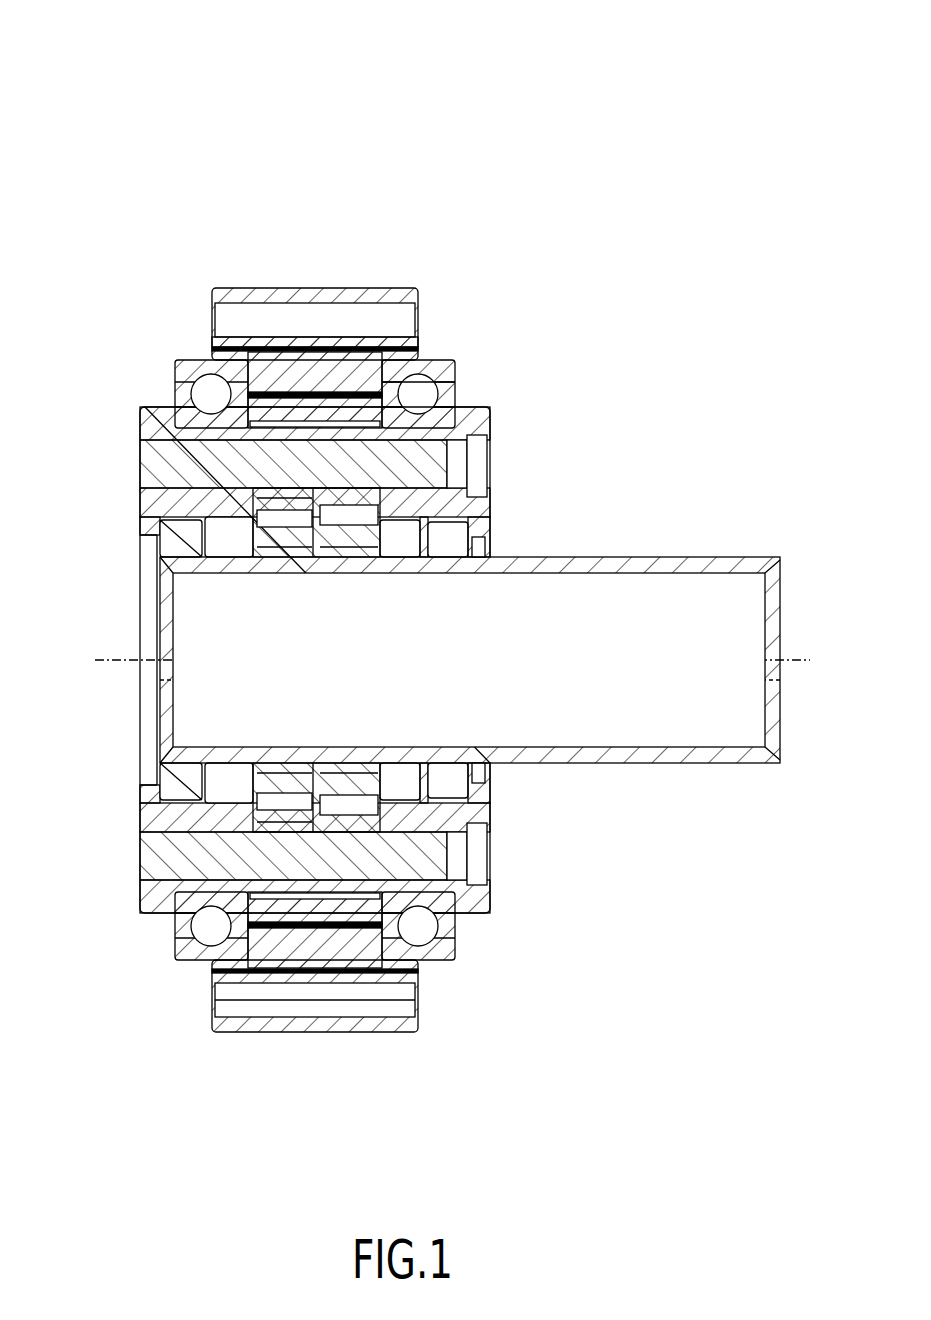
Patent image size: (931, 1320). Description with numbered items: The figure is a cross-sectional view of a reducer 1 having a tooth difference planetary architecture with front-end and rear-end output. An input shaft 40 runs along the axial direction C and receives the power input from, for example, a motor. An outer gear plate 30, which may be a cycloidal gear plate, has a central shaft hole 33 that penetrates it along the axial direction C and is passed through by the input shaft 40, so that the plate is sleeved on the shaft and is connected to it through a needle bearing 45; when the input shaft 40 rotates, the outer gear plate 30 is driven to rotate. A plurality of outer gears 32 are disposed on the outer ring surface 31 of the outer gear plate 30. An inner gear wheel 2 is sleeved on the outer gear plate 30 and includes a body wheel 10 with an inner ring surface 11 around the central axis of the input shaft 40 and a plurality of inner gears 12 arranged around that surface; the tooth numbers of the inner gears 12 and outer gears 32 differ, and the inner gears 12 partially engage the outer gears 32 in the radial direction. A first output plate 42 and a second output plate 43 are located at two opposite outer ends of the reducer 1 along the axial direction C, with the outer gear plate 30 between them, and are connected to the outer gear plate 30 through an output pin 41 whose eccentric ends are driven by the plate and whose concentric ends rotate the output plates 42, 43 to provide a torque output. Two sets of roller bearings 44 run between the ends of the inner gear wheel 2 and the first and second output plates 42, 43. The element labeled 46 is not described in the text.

The reducer 1 is at (792, 51).
The inner gear wheel 2 is at (465, 1013).
The body wheel 10 is at (323, 288).
The inner ring surface 11 is at (312, 348).
The inner gears 12 is at (340, 373).
The outer gear plate 30 is at (419, 350).
The outer ring surface 31 is at (395, 388).
The outer gears 32 is at (405, 347).
The central shaft hole 33 is at (437, 860).
The input shaft 40 is at (625, 628).
The output pin 41 is at (191, 397).
The first output plate 42 is at (163, 502).
The second output plate 43 is at (488, 500).
The roller bearings 44 is at (193, 360).
The needle bearing 45 is at (245, 806).
The lower ball 46 is at (193, 919).
The axial direction C is at (434, 661).